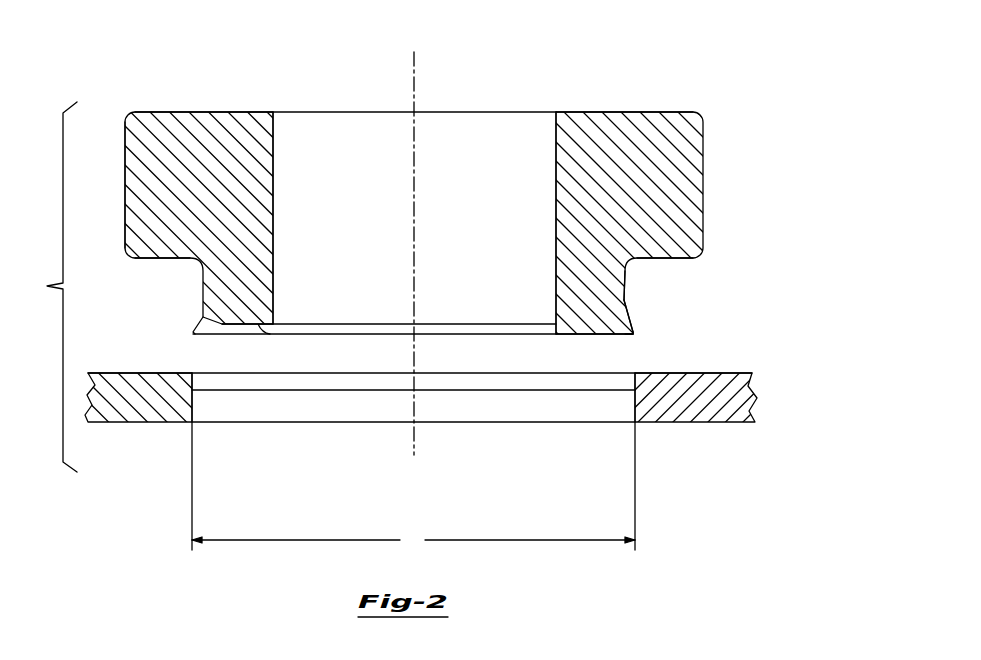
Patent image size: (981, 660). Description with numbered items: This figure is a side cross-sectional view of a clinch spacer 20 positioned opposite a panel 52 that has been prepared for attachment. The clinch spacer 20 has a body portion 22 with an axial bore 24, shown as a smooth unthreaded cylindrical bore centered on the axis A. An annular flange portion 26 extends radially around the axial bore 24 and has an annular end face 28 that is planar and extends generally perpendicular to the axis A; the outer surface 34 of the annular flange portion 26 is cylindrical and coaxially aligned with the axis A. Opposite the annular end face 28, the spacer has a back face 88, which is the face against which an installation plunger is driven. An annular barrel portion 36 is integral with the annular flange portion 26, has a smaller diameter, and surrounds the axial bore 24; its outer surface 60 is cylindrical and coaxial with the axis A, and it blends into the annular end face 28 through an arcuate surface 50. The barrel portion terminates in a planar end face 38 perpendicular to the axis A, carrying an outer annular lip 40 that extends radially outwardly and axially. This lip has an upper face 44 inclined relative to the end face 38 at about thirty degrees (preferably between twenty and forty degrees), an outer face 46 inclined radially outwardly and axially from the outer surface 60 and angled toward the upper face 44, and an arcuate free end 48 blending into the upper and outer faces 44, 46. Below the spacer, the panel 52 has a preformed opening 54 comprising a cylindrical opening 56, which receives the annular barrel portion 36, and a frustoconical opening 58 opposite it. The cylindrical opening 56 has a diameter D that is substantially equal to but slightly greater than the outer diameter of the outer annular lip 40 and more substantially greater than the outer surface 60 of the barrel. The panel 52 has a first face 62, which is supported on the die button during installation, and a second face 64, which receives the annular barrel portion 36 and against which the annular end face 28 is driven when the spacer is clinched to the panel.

The clinch spacer 20 is at (666, 88).
The body portion 22 is at (178, 128).
The axial bore 24 is at (273, 172).
The annular flange portion 26 is at (680, 158).
The annular end face 28 is at (150, 258).
The outer surface 34 is at (125, 168).
The annular barrel portion 36 is at (574, 279).
The end face 38 is at (262, 327).
The outer annular lip 40 is at (632, 337).
The upper face 44 is at (223, 333).
The outer face 46 is at (630, 318).
The free end 48 is at (203, 336).
The arcuate surface 50 is at (636, 262).
The panel 52 is at (150, 408).
The opening 54 is at (352, 412).
The cylindrical opening 56 is at (633, 382).
The frustoconical opening 58 is at (194, 398).
The outer surface 60 is at (626, 295).
The first face 62 is at (690, 423).
The second face 64 is at (98, 372).
The back face 88 is at (578, 111).
The axis A is at (414, 82).
The diameter D is at (413, 540).